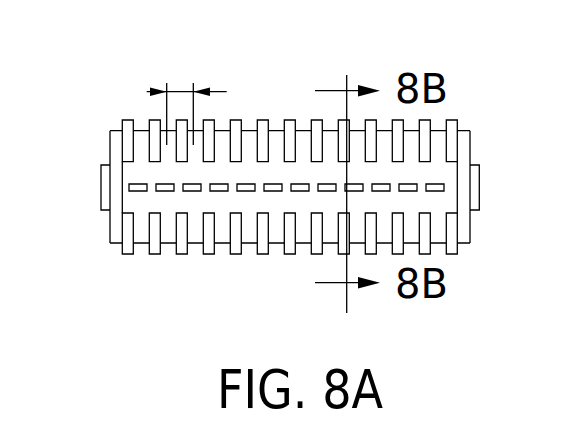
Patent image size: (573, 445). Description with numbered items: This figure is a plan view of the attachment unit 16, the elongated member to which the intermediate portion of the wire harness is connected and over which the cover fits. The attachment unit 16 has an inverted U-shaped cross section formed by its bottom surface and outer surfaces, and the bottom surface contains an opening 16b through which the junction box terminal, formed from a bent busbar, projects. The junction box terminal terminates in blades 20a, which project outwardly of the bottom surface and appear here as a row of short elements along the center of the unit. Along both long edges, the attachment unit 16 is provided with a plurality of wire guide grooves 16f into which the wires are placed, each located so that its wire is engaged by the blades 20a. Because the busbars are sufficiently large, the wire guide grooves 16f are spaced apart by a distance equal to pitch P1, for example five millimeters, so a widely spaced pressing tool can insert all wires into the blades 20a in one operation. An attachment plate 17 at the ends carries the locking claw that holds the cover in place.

The attachment unit 16 is at (253, 85).
The wire guide grooves 16f is at (138, 122).
The opening 16b is at (444, 186).
The attachment plate 17 is at (117, 241).
The blades 20a is at (136, 190).
The pitch P1 is at (180, 92).